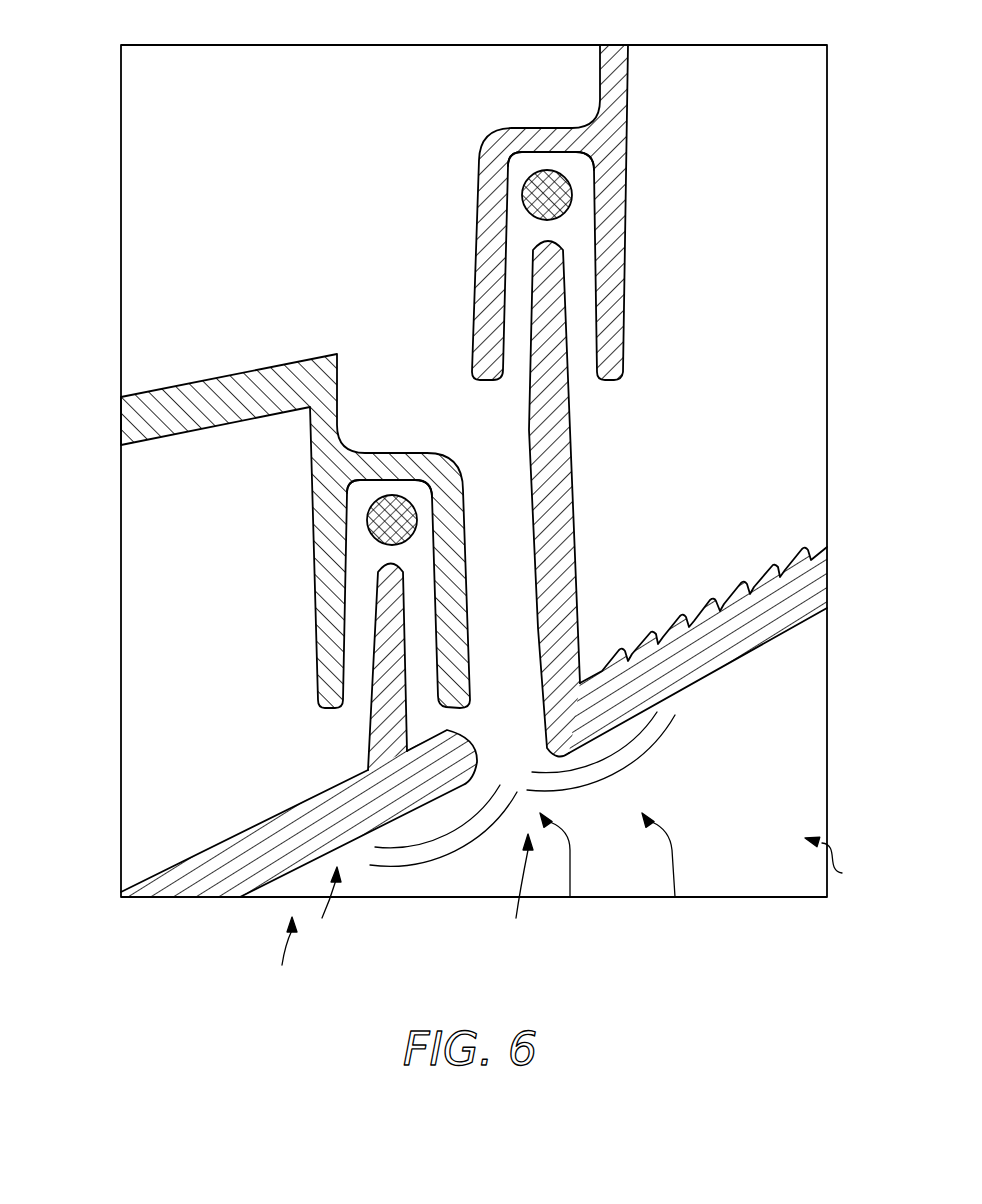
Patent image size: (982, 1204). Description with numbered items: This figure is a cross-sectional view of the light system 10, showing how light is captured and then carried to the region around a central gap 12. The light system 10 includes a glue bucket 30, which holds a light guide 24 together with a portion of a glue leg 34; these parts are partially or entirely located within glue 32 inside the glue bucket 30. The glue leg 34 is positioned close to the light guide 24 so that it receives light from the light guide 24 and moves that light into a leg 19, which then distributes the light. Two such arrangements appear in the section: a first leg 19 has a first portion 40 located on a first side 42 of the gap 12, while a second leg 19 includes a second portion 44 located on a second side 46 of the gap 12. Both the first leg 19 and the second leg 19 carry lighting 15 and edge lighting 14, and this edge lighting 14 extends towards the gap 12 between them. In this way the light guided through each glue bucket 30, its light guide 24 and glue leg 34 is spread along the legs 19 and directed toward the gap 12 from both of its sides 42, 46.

The light system 10 is at (98, 63).
The gap 12 is at (517, 889).
The edge lighting 14 is at (566, 879).
The lighting 15 is at (440, 865).
The leg 19 is at (743, 637).
The light guide 24 is at (572, 195).
The glue bucket 30 is at (378, 452).
The glue 32 is at (567, 167).
The glue leg 34 is at (555, 278).
The first portion 40 is at (324, 906).
The first side 42 is at (282, 953).
The second portion 44 is at (668, 879).
The second side 46 is at (838, 866).